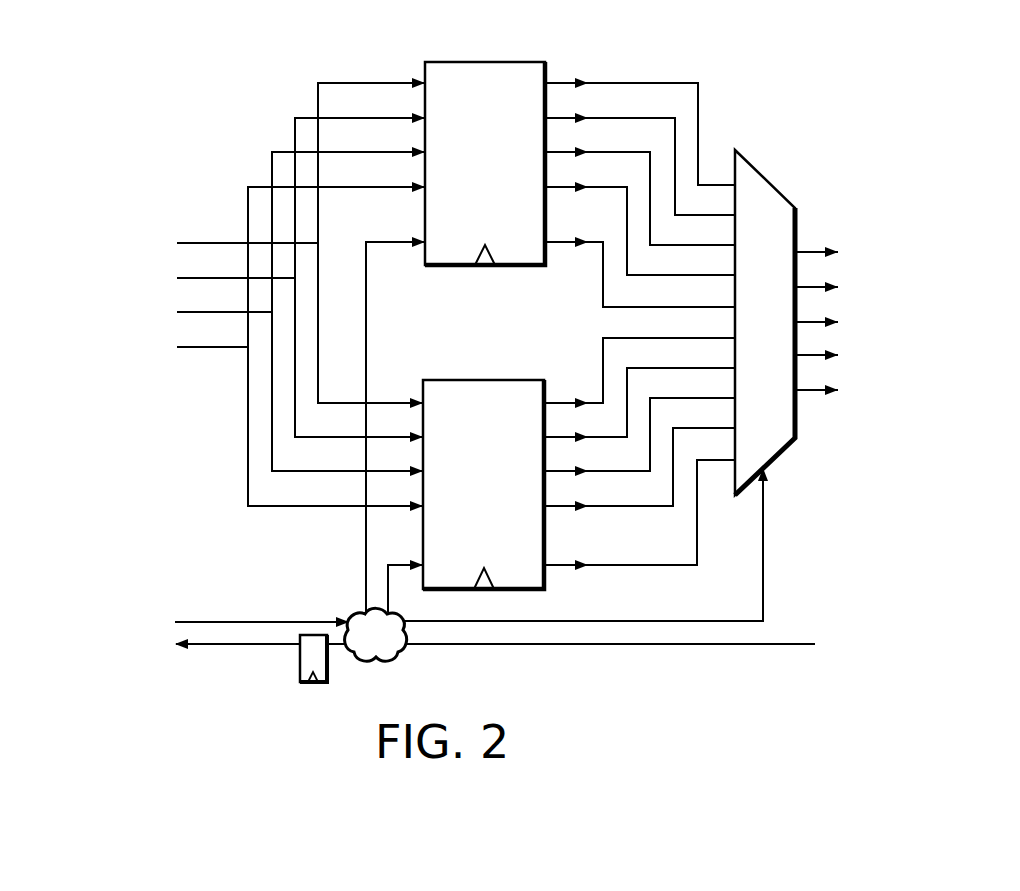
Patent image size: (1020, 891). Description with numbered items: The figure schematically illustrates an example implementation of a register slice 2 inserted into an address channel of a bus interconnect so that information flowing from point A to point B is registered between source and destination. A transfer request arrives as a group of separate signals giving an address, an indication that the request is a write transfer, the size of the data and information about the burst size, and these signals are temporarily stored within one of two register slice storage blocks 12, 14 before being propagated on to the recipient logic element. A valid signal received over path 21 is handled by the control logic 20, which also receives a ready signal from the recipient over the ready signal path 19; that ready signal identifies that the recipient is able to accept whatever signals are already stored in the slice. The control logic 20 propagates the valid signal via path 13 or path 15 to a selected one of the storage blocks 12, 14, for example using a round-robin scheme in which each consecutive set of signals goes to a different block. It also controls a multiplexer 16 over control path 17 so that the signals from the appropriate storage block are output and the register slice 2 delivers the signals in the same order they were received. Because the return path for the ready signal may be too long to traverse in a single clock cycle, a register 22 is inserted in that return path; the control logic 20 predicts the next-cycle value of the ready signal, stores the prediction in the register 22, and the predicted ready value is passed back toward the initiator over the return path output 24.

The register slice 2 is at (744, 56).
The register slice storage block 12 is at (522, 62).
The path 13 is at (394, 245).
The register slice storage block 14 is at (520, 380).
The path 15 is at (387, 565).
The multiplexer 16 is at (800, 218).
The control path 17 is at (765, 538).
The ready signal path 19 is at (705, 645).
The control logic 20 is at (373, 660).
The path 21 is at (243, 620).
The register 22 is at (308, 683).
The return path output 24 is at (245, 648).